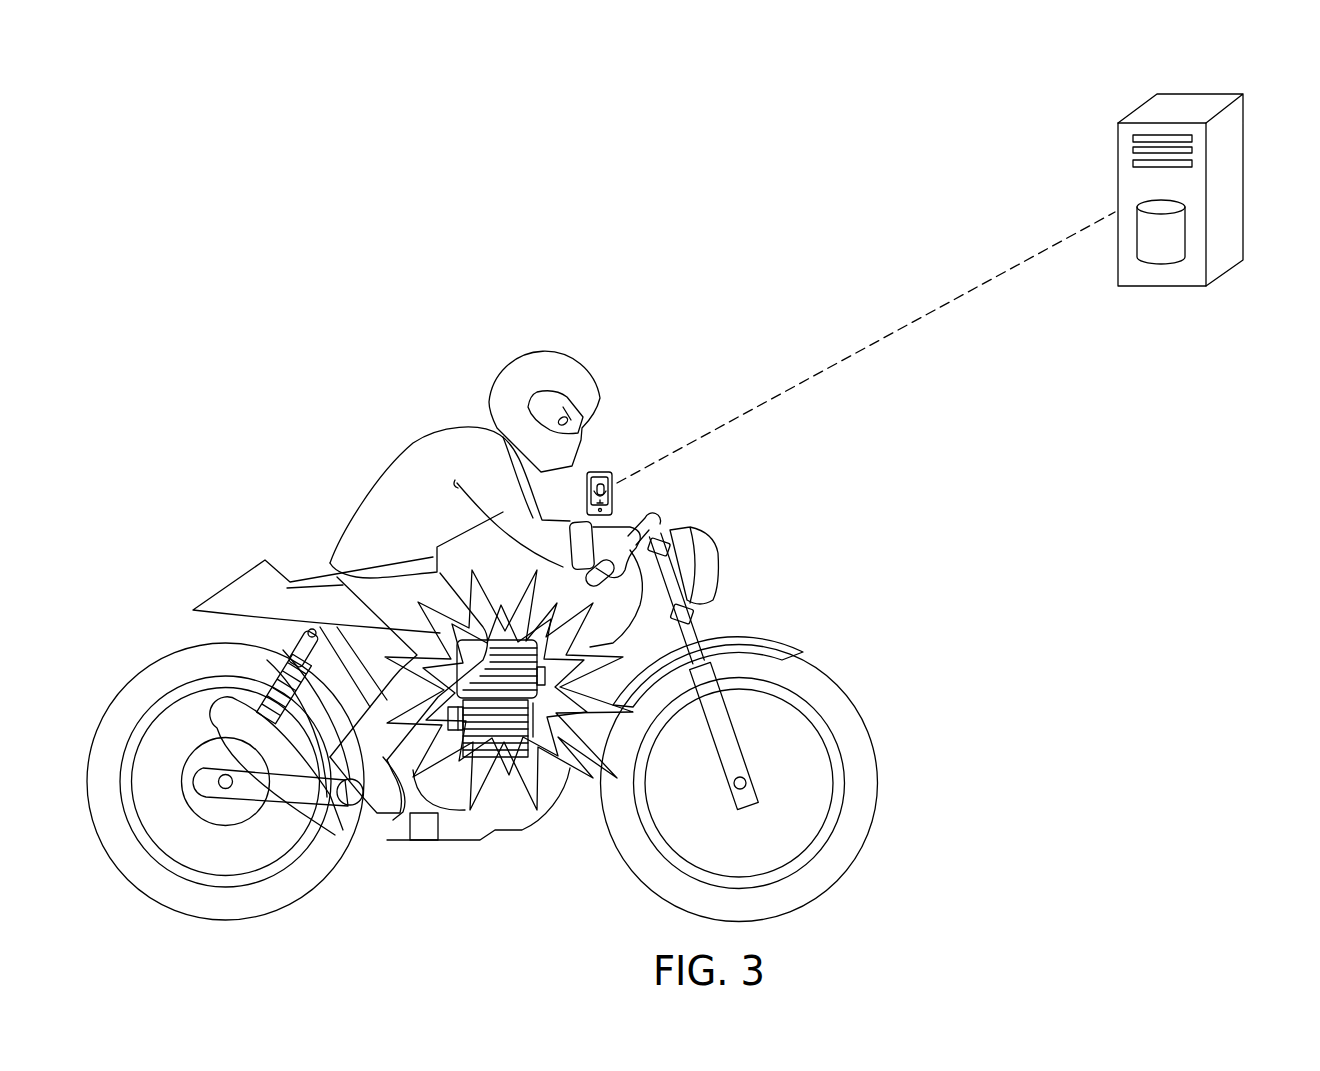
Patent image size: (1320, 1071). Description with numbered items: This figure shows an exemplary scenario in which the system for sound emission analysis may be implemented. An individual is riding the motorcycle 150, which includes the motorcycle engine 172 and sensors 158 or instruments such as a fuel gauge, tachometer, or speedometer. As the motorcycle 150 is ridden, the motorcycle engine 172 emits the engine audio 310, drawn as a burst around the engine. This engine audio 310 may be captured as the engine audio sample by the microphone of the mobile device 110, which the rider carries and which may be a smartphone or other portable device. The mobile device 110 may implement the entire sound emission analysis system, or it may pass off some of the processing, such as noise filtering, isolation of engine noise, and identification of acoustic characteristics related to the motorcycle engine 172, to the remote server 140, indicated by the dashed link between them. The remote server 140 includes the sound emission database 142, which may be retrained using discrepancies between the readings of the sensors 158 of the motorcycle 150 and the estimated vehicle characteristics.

The mobile device 110 is at (598, 472).
The remote server 140 is at (1246, 140).
The sound emission database 142 is at (1161, 230).
The motorcycle 150 is at (223, 583).
The sensors 158 is at (424, 826).
The motorcycle engine 172 is at (500, 717).
The engine audio 310 is at (473, 550).